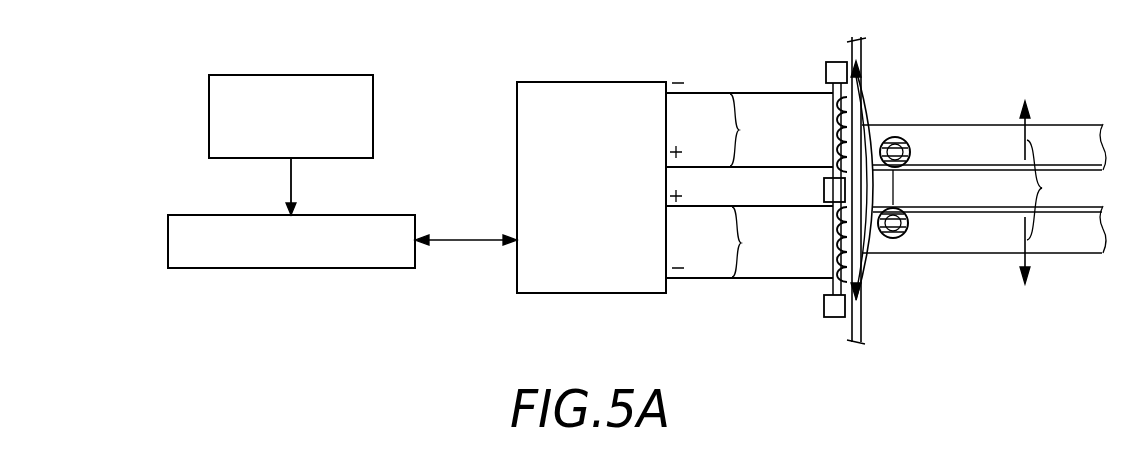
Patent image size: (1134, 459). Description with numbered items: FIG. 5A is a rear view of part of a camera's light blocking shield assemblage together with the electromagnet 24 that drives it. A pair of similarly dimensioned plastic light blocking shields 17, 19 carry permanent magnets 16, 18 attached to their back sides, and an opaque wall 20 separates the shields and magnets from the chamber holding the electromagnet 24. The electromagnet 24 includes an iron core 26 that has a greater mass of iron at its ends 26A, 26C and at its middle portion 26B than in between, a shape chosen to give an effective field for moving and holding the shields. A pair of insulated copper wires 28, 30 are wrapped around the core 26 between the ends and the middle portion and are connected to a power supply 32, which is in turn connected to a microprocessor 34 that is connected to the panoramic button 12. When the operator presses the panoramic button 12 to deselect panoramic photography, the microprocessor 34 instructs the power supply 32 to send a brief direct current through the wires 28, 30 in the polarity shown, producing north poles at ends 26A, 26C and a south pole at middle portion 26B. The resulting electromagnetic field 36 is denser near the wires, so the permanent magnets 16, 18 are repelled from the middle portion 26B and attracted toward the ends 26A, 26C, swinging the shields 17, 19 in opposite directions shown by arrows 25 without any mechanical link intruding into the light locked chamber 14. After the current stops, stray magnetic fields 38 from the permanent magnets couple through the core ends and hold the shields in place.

The panoramic button 12 is at (315, 75).
The microprocessor 34 is at (348, 215).
The power supply 32 is at (590, 82).
The copper wire 28 is at (749, 125).
The copper wire 30 is at (749, 234).
The iron core 26 is at (827, 130).
The end of iron core 26A is at (830, 62).
The middle portion of iron core 26B is at (823, 190).
The end of iron core 26C is at (833, 318).
The electromagnet 24 is at (780, 310).
The opaque wall 20 is at (863, 60).
The light blocking shield 17 is at (984, 125).
The light blocking shield 19 is at (981, 253).
The light locked chamber 14 is at (996, 205).
The electromagnetic field 36 is at (893, 137).
The permanent magnet 16 is at (910, 147).
The permanent magnet 18 is at (907, 224).
The stray magnetic fields 38 is at (893, 204).
The arrows 25 is at (1050, 192).